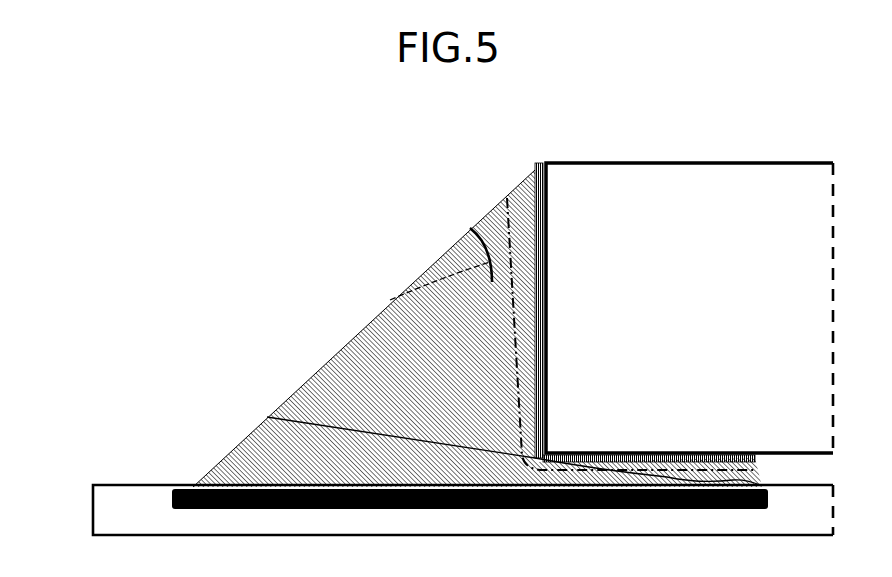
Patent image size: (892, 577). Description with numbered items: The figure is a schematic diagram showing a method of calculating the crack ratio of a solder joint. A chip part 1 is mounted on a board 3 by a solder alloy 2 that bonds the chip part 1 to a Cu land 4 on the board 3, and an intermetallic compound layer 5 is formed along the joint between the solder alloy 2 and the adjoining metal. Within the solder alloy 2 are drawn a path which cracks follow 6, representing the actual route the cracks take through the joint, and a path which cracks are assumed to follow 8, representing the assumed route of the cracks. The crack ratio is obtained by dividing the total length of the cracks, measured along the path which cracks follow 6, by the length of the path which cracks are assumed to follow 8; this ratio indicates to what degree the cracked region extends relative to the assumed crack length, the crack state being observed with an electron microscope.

The chip part 1 is at (562, 193).
The solder alloy 2 is at (405, 338).
The board 3 is at (142, 509).
The Cu land 4 is at (193, 486).
The intermetallic compound layer 5 is at (525, 305).
The path which cracks follow 6 is at (390, 300).
The path which cracks are assumed to follow 8 is at (500, 222).